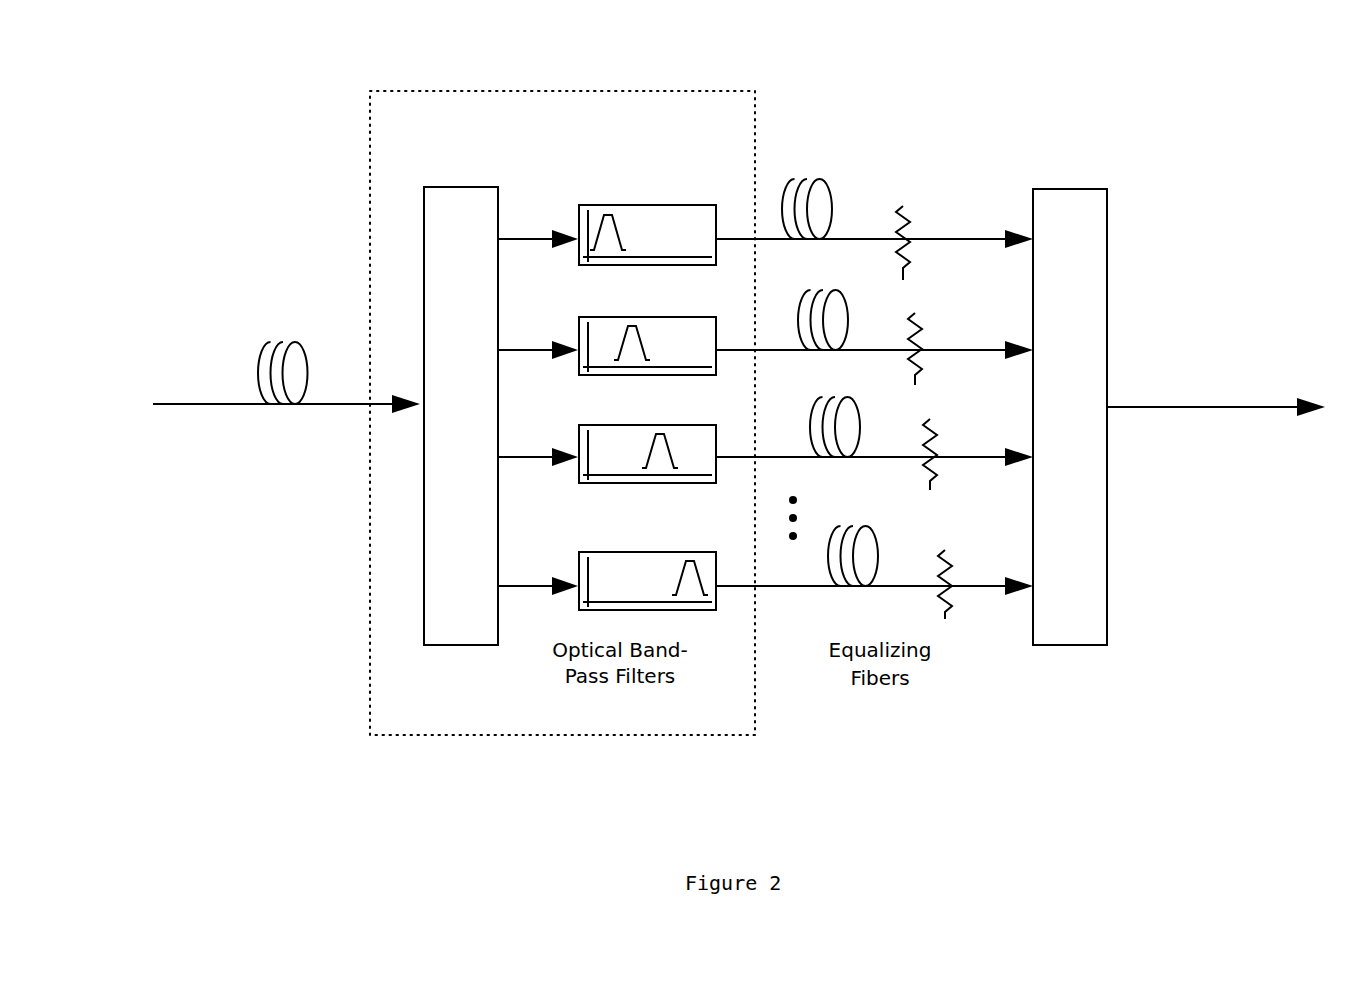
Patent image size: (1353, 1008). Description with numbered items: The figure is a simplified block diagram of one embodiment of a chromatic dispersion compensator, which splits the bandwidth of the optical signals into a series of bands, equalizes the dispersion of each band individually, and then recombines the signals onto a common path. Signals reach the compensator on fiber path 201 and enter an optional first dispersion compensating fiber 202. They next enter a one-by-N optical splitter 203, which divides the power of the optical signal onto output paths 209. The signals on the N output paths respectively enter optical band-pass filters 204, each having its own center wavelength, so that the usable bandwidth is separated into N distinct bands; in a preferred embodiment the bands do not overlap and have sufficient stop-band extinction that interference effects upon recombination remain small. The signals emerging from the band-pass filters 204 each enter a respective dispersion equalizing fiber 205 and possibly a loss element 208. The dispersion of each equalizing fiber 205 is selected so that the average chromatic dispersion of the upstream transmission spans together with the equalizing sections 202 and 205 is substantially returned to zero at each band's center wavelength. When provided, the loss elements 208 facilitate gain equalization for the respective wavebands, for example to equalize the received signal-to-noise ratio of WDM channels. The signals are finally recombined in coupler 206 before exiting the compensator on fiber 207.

The fiber path 201 is at (188, 405).
The first dispersion compensating fiber 202 is at (278, 340).
The 1×N optical splitter 203 is at (460, 187).
The optical band-pass filters 204 is at (693, 552).
The dispersion equalizing fibers 205 is at (851, 527).
The coupler 206 is at (1068, 189).
The fiber 207 is at (1214, 406).
The loss elements 208 is at (903, 206).
The output paths 209 is at (526, 585).